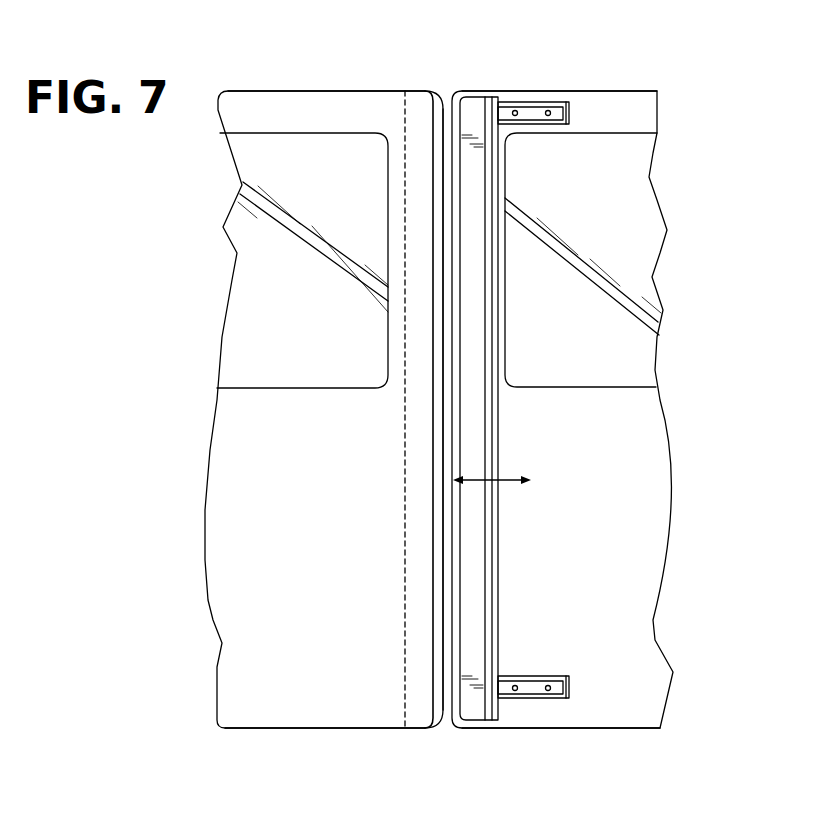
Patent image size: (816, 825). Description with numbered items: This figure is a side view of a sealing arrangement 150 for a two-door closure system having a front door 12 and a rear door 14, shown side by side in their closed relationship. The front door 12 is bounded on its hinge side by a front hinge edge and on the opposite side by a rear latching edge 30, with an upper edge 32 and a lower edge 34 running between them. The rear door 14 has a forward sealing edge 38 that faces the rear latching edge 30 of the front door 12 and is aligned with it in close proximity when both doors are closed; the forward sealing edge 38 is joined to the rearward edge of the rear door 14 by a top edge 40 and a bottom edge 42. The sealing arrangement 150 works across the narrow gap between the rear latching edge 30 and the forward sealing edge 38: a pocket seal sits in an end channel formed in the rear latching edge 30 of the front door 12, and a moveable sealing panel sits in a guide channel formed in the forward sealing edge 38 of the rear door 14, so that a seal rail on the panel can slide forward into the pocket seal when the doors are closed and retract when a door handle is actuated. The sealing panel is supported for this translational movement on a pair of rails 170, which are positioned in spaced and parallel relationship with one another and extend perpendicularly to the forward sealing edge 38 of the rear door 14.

The front door 12 is at (307, 82).
The rear door 14 is at (578, 80).
The rear latching edge 30 is at (433, 413).
The upper edge 32 is at (368, 90).
The lower edge 34 is at (325, 730).
The forward sealing edge 38 is at (452, 525).
The top edge 40 is at (523, 90).
The bottom edge 42 is at (557, 730).
The sealing arrangement 150 is at (568, 514).
The rails 170 is at (543, 124).